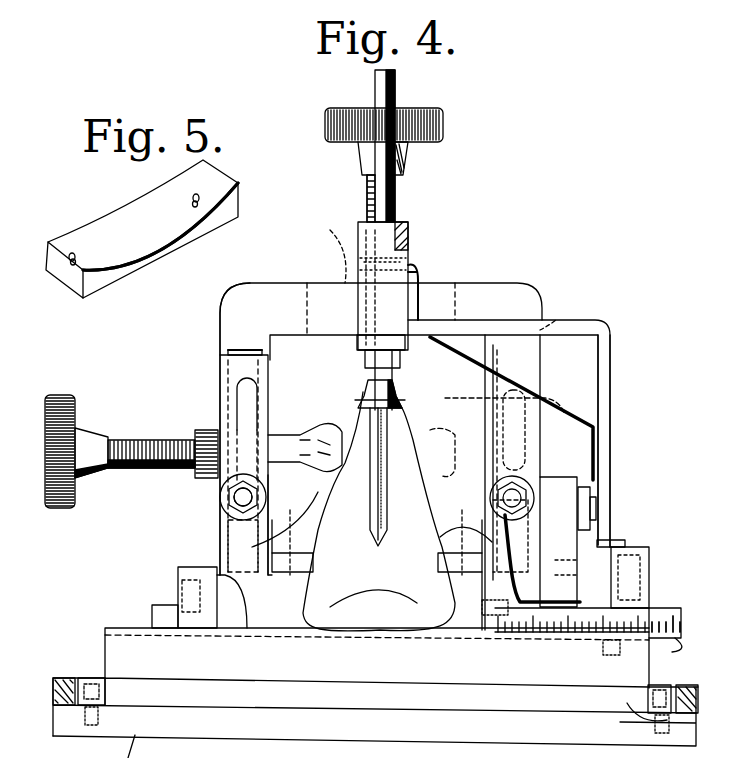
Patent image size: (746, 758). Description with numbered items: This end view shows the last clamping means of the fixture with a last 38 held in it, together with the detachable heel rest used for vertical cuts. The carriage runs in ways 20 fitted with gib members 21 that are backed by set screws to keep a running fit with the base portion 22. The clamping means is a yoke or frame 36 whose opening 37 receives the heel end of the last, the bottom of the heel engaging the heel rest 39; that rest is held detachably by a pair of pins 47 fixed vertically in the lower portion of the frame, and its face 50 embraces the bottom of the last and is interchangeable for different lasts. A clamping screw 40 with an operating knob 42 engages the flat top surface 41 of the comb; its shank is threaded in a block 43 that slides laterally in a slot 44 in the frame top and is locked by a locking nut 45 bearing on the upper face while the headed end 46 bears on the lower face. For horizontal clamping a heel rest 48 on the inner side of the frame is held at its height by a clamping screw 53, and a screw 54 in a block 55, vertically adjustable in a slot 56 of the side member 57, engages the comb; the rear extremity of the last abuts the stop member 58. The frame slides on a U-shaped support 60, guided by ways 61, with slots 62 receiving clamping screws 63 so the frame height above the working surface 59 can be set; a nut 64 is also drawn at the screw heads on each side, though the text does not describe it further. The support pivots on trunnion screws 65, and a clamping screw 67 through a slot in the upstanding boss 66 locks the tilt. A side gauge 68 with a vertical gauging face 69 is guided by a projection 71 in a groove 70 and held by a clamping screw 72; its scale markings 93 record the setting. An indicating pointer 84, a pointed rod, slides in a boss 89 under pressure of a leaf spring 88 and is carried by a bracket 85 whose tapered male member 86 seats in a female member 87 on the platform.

In FIG. 4, the ways 20 is at (66, 712).
In FIG. 4, the gib members 21 is at (90, 678).
In FIG. 4, the base portion 22 is at (697, 738).
In FIG. 4, the yoke or frame 36 is at (482, 292).
In FIG. 4, the opening 37 is at (288, 345).
In FIG. 4, the last 38 is at (424, 522).
In FIG. 5, the heel rest 39 is at (108, 280).
In FIG. 4, the heel rest 39 is at (280, 532).
In FIG. 4, the clamping screw 40 is at (367, 185).
In FIG. 4, the flat top surface 41 is at (396, 398).
In FIG. 4, the operating knob 42 is at (420, 130).
In FIG. 4, the block 43 is at (321, 252).
In FIG. 4, the slot 44 is at (345, 283).
In FIG. 4, the locking nut 45 is at (412, 266).
In FIG. 4, the headed end 46 is at (358, 348).
In FIG. 4, the pins 47 is at (300, 540).
In FIG. 4, the heel rest 48 is at (491, 430).
In FIG. 5, the face 50 is at (126, 232).
In FIG. 4, the face 50 is at (268, 516).
In FIG. 4, the clamping screw 53 is at (545, 413).
In FIG. 4, the screw 54 is at (150, 435).
In FIG. 4, the block 55 is at (290, 432).
In FIG. 4, the slot 56 is at (228, 527).
In FIG. 4, the side member 57 is at (222, 355).
In FIG. 4, the stop member 58 is at (415, 436).
In FIG. 4, the working surface 59 is at (194, 594).
In FIG. 4, the U-shaped support 60 is at (221, 373).
In FIG. 4, the ways 61 is at (240, 350).
In FIG. 4, the slots 62 is at (243, 395).
In FIG. 4, the clamping screws 63 is at (238, 503).
In FIG. 4, the nut 64 is at (229, 496).
In FIG. 4, the trunnion screws 65 is at (182, 592).
In FIG. 4, the boss 66 is at (580, 480).
In FIG. 4, the clamping screw 67 is at (592, 500).
In FIG. 4, the side gauge 68 is at (500, 620).
In FIG. 4, the gauging face 69 is at (519, 551).
In FIG. 4, the groove 70 is at (590, 640).
In FIG. 4, the projection 71 is at (676, 640).
In FIG. 4, the clamping screw 72 is at (648, 594).
In FIG. 4, the indicating pointer 84 is at (368, 200).
In FIG. 4, the bracket 85 is at (604, 396).
In FIG. 4, the tapered male member 86 is at (618, 540).
In FIG. 4, the female member 87 is at (650, 552).
In FIG. 4, the leaf spring 88 is at (405, 224).
In FIG. 4, the boss 89 is at (358, 230).
In FIG. 4, the scale markings 93 is at (680, 616).